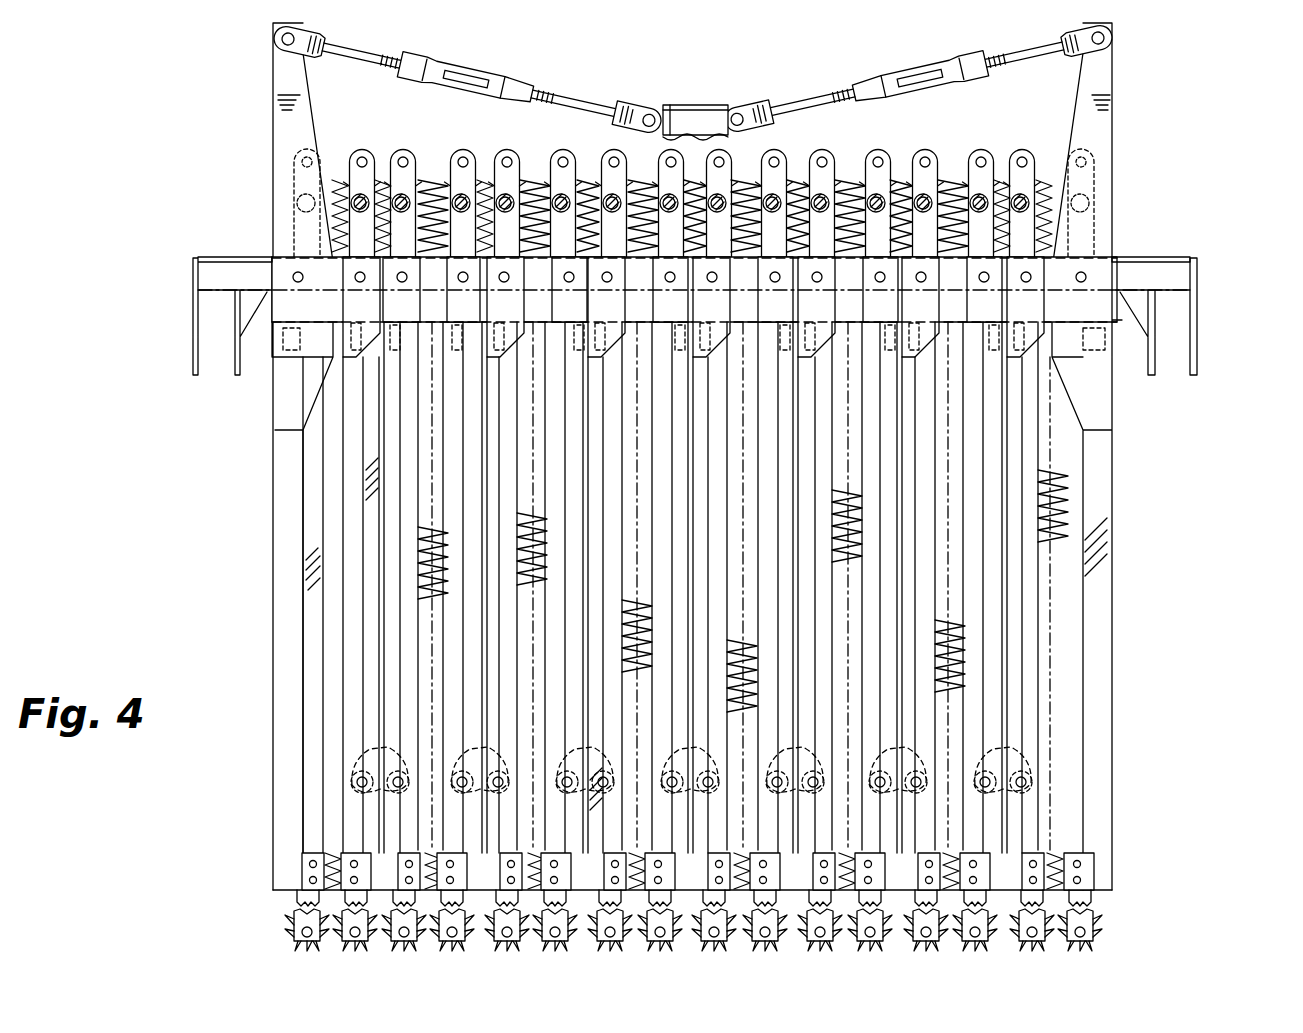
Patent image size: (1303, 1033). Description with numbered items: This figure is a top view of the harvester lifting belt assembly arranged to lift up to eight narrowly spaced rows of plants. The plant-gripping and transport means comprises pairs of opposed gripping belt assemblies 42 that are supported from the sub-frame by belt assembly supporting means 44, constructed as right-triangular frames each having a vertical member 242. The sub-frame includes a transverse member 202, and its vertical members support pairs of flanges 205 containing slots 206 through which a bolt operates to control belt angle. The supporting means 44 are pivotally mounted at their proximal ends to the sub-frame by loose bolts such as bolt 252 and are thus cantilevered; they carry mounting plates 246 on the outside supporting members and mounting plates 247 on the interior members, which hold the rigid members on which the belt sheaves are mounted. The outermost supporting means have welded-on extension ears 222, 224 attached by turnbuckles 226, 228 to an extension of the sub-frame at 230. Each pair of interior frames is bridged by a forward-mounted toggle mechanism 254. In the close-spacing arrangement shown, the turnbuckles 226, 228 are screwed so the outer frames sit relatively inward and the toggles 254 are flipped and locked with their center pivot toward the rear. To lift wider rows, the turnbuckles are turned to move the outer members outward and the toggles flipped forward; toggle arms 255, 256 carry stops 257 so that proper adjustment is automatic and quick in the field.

The belt assembly supporting means 44 is at (1130, 566).
The gripping belt assemblies 42 is at (1105, 937).
The transverse member 202 is at (1115, 258).
The flanges 205 is at (1153, 318).
The slots 206 is at (1200, 342).
The extension ear 222 is at (278, 122).
The extension ear 224 is at (1112, 126).
The turnbuckle 226 is at (453, 66).
The turnbuckle 228 is at (932, 66).
The extension of the sub-frame 230 is at (697, 105).
The vertical member 242 is at (278, 360).
The mounting plates 246 is at (277, 888).
The mounting plates 247 is at (333, 893).
The loose bolt 252 is at (297, 274).
The toggle mechanism 254 is at (342, 762).
The toggle arm 255 is at (355, 772).
The toggle arm 256 is at (368, 792).
The stops 257 is at (360, 757).